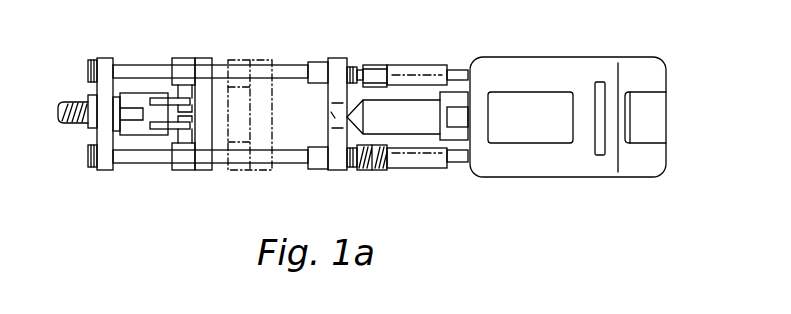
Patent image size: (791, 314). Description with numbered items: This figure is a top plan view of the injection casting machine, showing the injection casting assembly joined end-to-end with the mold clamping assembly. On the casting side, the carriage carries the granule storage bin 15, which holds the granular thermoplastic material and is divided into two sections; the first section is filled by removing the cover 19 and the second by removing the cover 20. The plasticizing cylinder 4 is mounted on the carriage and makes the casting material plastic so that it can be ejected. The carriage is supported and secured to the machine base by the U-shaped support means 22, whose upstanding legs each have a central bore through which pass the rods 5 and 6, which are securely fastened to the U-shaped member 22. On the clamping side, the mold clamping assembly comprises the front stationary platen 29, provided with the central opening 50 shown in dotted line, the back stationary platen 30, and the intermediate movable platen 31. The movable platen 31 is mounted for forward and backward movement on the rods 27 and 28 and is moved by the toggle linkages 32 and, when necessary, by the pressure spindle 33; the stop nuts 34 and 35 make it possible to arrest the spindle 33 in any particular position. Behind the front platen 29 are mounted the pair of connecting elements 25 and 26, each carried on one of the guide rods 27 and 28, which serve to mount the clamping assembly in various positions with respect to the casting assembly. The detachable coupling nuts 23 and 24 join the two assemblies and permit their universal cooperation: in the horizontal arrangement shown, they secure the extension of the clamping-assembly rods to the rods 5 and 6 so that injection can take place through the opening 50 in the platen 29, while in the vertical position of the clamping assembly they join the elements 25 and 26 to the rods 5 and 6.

The plasticizing cylinder 4 is at (406, 127).
The rod 5 is at (459, 77).
The rod 6 is at (462, 158).
The granule storage bin 15 is at (642, 75).
The cover 19 is at (548, 110).
The cover 20 is at (647, 130).
The U-shaped support means 22 is at (437, 167).
The coupling nut 23 is at (373, 171).
The coupling nut 24 is at (373, 70).
The connecting element 25 is at (318, 164).
The connecting element 26 is at (320, 72).
The rod 27 is at (225, 68).
The rod 28 is at (222, 158).
The front stationary platen 29 is at (336, 163).
The back stationary platen 30 is at (105, 158).
The intermediate movable platen 31 is at (200, 158).
The toggle linkages 32 is at (142, 121).
The pressure spindle 33 is at (66, 125).
The stop nut 34 is at (90, 102).
The stop nut 35 is at (118, 108).
The central opening 50 is at (333, 117).